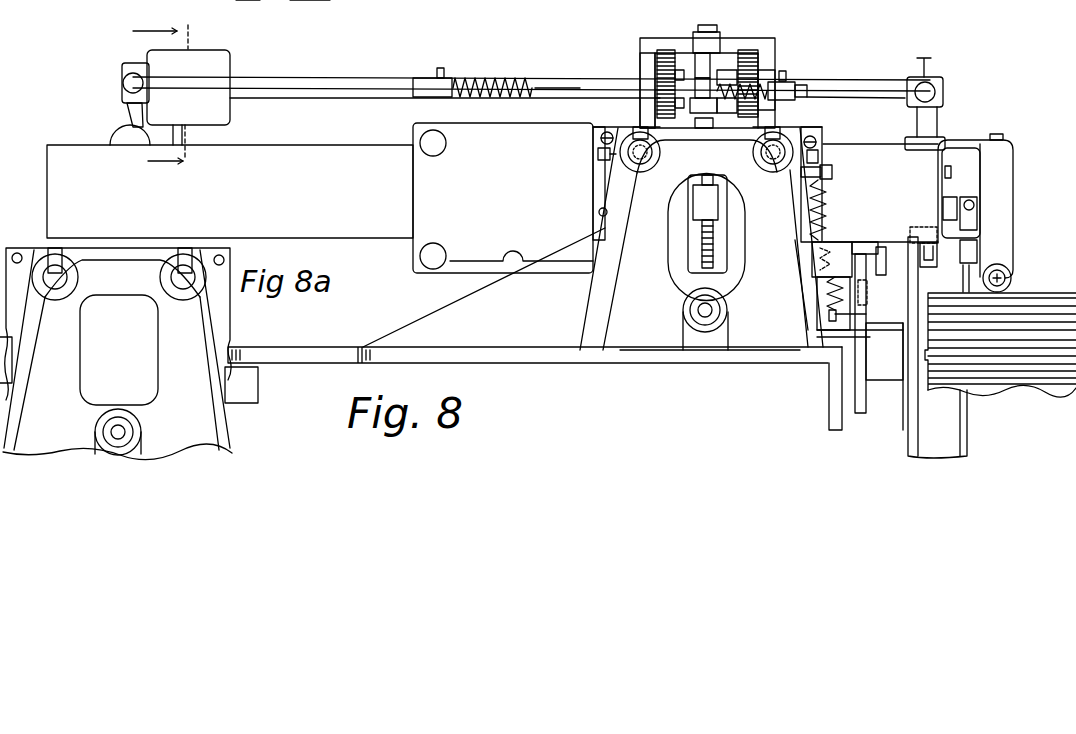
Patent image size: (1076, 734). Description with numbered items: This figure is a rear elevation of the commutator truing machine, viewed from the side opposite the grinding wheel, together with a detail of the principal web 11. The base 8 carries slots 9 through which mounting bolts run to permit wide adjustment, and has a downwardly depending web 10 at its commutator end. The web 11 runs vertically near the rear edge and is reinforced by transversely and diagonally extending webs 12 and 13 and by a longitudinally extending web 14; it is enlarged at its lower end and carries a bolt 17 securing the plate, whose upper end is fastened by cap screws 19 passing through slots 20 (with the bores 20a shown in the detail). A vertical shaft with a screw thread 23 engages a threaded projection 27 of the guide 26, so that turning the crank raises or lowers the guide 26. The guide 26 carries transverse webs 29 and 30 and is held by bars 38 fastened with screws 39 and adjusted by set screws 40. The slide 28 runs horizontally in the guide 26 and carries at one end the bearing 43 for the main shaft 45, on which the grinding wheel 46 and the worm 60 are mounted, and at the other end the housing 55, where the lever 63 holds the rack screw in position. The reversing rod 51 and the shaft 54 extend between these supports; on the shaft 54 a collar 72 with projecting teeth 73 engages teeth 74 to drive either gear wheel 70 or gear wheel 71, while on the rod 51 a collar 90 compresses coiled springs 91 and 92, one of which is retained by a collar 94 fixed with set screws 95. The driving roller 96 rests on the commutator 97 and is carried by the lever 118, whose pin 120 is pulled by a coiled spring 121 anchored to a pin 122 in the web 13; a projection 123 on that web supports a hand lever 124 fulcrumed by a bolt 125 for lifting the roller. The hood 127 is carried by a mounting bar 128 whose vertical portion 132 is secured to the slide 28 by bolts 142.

In FIG. 8, the base 8 is at (645, 362).
In FIG. 8, the slots 9 is at (167, 86).
In FIG. 8, the downwardly depending web 10 is at (825, 415).
In FIG. 8, the web 11 is at (710, 245).
In FIG. 8A, the web 11 is at (117, 360).
In FIG. 8, the transversely and diagonally extending web 12 is at (603, 243).
In FIG. 8A, the transversely and diagonally extending web 12 is at (12, 393).
In FIG. 8, the transversely and diagonally extending web 13 is at (800, 242).
In FIG. 8A, the transversely and diagonally extending web 13 is at (212, 372).
In FIG. 8, the longitudinally extending web 14 is at (484, 287).
In FIG. 8, the bolt 17 is at (683, 312).
In FIG. 8A, the bolt 17 is at (118, 432).
In FIG. 8, the cap screws 19 is at (645, 166).
In FIG. 8, the slots 20 is at (636, 130).
In FIG. 8A, the slots 20 is at (160, 277).
In FIG. 8A, the bearing bore 20a is at (58, 290).
In FIG. 8, the screw thread 23 is at (716, 246).
In FIG. 8, the guide 26 is at (892, 132).
In FIG. 8, the projection 27 is at (705, 221).
In FIG. 8, the slide 28 is at (492, 193).
In FIG. 8, the transverse web 29 is at (647, 70).
In FIG. 8, the transverse web 30 is at (778, 110).
In FIG. 8, the bars 38 is at (600, 184).
In FIG. 8A, the bars 38 is at (243, 338).
In FIG. 8, the screws 39 is at (600, 140).
In FIG. 8, the set screws 40 is at (818, 157).
In FIG. 8, the bearing 43 is at (945, 85).
In FIG. 8, the main shaft 45 is at (310, 9).
In FIG. 8, the grinding wheel 46 is at (1011, 278).
In FIG. 8, the reversing rod 51 is at (340, 77).
In FIG. 8, the shaft 54 is at (557, 80).
In FIG. 8, the housing 55 is at (232, 112).
In FIG. 8, the worm 60 is at (240, 15).
In FIG. 8, the lever 63 is at (128, 115).
In FIG. 8, the gear wheel 70 is at (750, 50).
In FIG. 8, the gear wheel 71 is at (657, 62).
In FIG. 8, the collar 72 is at (713, 45).
In FIG. 8, the projecting teeth 73 is at (683, 70).
In FIG. 8, the teeth 74 is at (666, 52).
In FIG. 8, the collar 90 is at (703, 128).
In FIG. 8, the coiled spring 91 is at (506, 78).
In FIG. 8, the coiled spring 92 is at (765, 65).
In FIG. 8, the collar 94 is at (790, 83).
In FIG. 8, the set screws 95 is at (436, 70).
In FIG. 8, the driving roller 96 is at (907, 438).
In FIG. 8, the commutator 97 is at (1045, 303).
In FIG. 8, the lever 118 is at (853, 380).
In FIG. 8, the pin 120 is at (827, 318).
In FIG. 8, the coiled spring 121 is at (780, 285).
In FIG. 8, the pin 122 is at (840, 227).
In FIG. 8, the projection 123 is at (842, 255).
In FIG. 8, the hand lever 124 is at (860, 313).
In FIG. 8, the bolt 125 is at (871, 276).
In FIG. 8, the hood 127 is at (1007, 176).
In FIG. 8, the mounting bar 128 is at (975, 140).
In FIG. 8, the vertical portion 132 is at (945, 210).
In FIG. 8, the bolts 142 is at (942, 185).